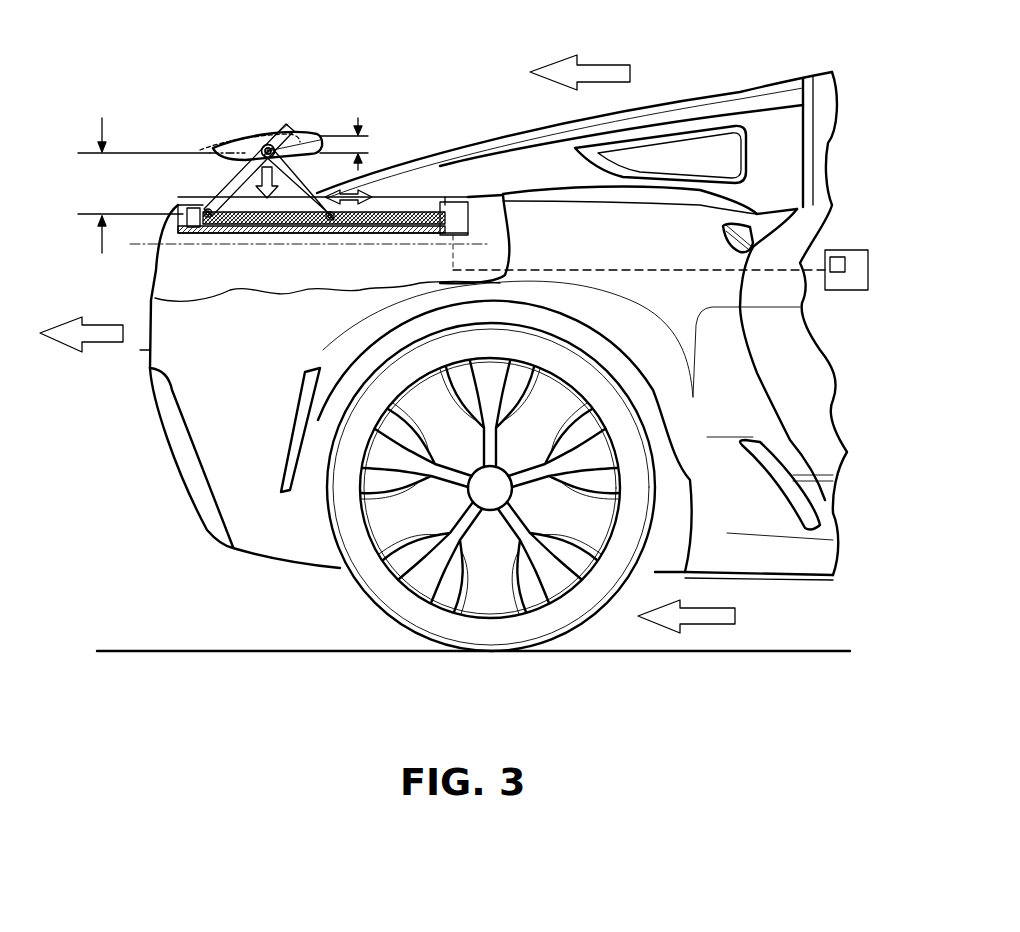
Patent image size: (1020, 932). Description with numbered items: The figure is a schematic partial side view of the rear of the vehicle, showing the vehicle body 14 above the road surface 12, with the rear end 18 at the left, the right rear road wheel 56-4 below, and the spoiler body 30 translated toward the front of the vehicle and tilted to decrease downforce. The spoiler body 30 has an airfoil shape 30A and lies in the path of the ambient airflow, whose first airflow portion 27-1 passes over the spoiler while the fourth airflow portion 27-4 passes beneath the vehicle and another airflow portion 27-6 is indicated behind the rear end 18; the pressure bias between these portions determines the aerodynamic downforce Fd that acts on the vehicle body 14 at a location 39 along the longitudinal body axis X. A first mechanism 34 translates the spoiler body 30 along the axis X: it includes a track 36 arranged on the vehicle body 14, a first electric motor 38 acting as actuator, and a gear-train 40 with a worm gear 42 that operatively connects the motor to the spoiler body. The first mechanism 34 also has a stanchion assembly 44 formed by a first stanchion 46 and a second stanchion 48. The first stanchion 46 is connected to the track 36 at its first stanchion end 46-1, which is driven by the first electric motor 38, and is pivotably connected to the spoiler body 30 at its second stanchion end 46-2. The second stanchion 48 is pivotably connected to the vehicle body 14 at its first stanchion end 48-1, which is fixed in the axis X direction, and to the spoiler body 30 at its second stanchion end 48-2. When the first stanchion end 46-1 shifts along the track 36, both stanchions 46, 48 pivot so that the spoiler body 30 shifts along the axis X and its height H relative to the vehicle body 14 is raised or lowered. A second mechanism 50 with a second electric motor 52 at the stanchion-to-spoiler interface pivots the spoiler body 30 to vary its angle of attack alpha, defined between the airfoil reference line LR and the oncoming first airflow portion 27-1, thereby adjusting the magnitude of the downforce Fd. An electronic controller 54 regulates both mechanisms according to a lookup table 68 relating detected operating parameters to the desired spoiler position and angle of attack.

The road surface 12 is at (763, 654).
The vehicle body 14 is at (608, 249).
The rear end 18 is at (140, 350).
The first airflow portion 27-1 is at (617, 63).
The fourth airflow portion 27-4 is at (722, 606).
The airflow behind vehicle 27-6 is at (102, 343).
The spoiler body 30 is at (282, 128).
The airfoil shape 30A is at (198, 148).
The first mechanism 34 is at (280, 293).
The track 36 is at (395, 234).
The first electric motor 38 is at (462, 213).
The location 39 is at (277, 257).
The gear-train 40 is at (398, 194).
The worm gear 42 is at (405, 212).
The stanchion assembly 44 is at (308, 166).
The first stanchion 46 is at (293, 212).
The first stanchion end 46-1 is at (338, 221).
The second stanchion end 46-2 is at (308, 158).
The second stanchion 48 is at (222, 187).
The first stanchion end 48-1 is at (205, 208).
The second stanchion end 48-2 is at (247, 153).
The second mechanism 50 is at (256, 143).
The second electric motor 52 is at (268, 140).
The electronic controller 54 is at (833, 290).
The right rear road wheel 56-4 is at (373, 578).
The lookup table 68 is at (843, 260).
The height H is at (100, 122).
The reference line LR is at (197, 148).
The longitudinal body axis X is at (148, 246).
The aerodynamic downforce Fd is at (240, 230).
The angle of attack alpha is at (358, 118).